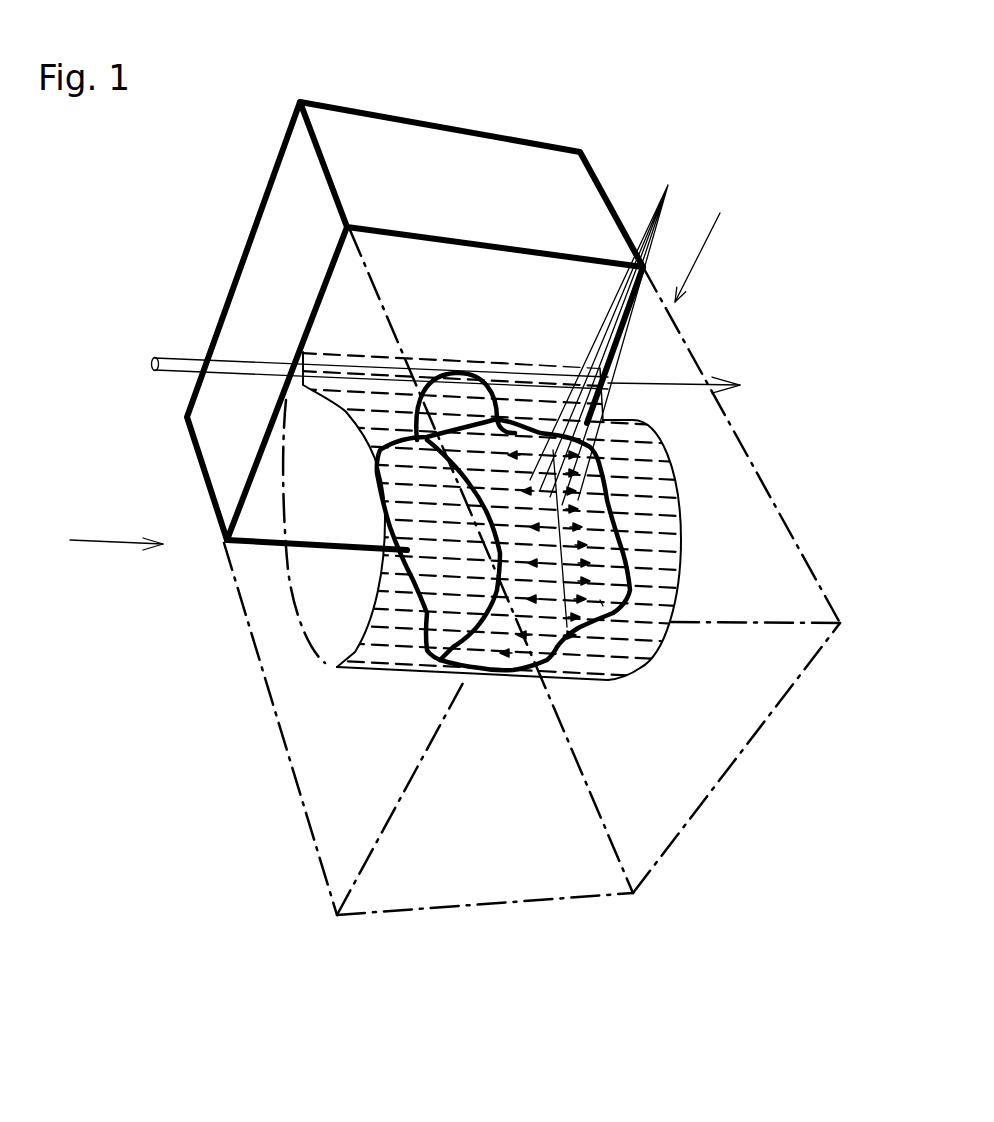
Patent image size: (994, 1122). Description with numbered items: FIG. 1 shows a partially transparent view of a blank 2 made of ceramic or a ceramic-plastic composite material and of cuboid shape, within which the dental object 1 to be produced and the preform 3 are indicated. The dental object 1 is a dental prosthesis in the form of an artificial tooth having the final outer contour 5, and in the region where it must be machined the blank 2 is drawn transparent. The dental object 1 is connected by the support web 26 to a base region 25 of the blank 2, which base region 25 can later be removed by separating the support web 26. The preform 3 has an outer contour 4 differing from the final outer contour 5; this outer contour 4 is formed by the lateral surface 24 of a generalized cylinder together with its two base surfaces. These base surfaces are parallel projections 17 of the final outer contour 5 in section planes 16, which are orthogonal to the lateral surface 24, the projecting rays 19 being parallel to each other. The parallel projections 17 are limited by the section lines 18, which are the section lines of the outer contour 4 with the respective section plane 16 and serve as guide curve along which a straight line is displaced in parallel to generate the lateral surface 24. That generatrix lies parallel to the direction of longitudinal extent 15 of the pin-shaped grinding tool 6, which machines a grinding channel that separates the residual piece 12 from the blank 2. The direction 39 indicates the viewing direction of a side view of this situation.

The dental object 1 is at (607, 543).
The blank 2 is at (706, 242).
The preform 3 is at (647, 490).
The outer contour 4 is at (628, 447).
The final outer contour 5 is at (600, 600).
The grinding tool 6 is at (177, 360).
The residual piece 12 is at (345, 810).
The direction of longitudinal extent 15 is at (672, 383).
The section planes 16 is at (350, 310).
The parallel projections 17 is at (323, 585).
The section lines 18 is at (283, 562).
The projecting rays 19 is at (611, 329).
The lateral surface 24 is at (650, 572).
The base region 25 is at (372, 138).
The support web 26 is at (450, 397).
The direction 39 is at (110, 548).